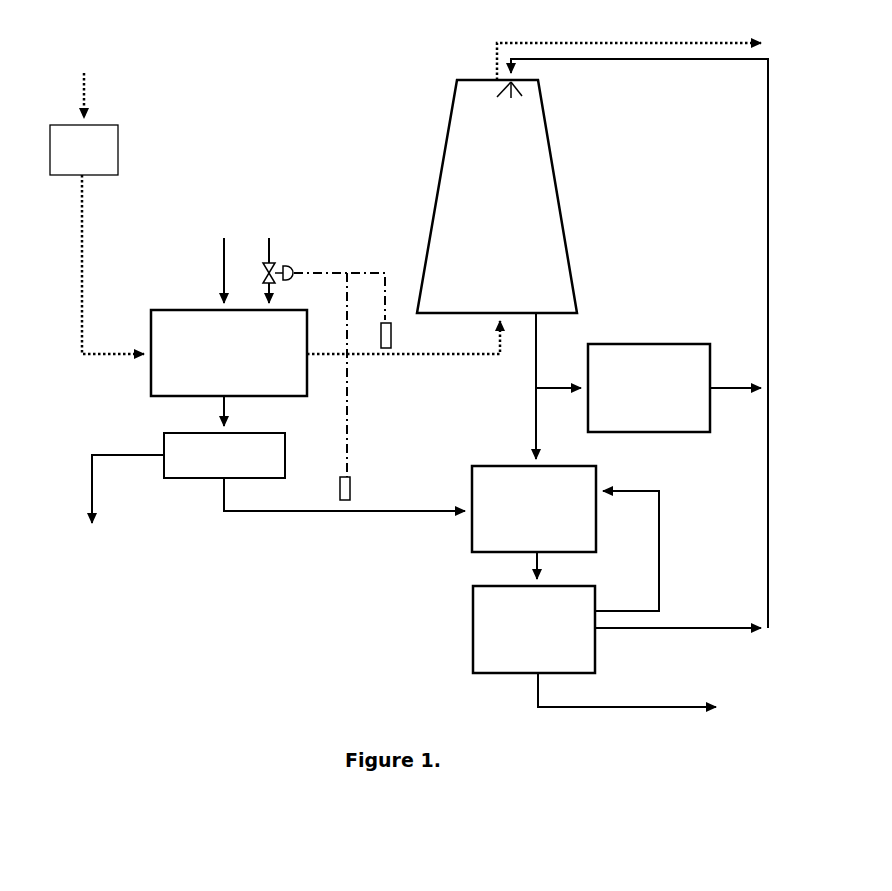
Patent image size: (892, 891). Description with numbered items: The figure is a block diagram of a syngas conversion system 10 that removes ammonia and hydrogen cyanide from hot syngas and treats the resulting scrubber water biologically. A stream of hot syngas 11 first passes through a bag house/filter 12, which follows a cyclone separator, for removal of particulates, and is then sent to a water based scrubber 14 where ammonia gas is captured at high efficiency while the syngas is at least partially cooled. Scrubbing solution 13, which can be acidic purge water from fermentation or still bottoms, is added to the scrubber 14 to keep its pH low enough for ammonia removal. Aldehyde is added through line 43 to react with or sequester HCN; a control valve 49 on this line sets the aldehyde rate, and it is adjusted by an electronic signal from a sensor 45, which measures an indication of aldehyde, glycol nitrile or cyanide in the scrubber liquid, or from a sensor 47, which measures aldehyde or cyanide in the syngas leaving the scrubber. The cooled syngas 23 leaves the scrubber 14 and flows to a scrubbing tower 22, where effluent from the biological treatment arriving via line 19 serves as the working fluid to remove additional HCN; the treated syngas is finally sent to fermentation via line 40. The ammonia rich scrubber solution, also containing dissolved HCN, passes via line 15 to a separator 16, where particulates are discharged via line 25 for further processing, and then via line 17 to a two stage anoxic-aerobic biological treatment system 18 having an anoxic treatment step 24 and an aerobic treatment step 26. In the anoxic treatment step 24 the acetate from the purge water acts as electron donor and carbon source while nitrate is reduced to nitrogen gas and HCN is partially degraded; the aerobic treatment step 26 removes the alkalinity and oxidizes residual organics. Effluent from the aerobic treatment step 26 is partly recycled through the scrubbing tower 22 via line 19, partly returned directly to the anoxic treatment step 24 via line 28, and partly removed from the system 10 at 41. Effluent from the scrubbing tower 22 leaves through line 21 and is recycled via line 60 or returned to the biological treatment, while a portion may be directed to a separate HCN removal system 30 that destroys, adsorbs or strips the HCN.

The syngas conversion system 10 is at (275, 647).
The stream of hot syngas 11 is at (77, 234).
The bag house/filter 12 is at (120, 143).
The scrubbing solution 13 is at (221, 257).
The water based scrubber 14 is at (229, 353).
The line 15 is at (223, 410).
The separator 16 is at (224, 455).
The line 17 is at (373, 515).
The anoxic-aerobic biological treatment system 18 is at (454, 599).
The line 19 is at (771, 282).
The line 21 is at (539, 351).
The scrubbing tower 22 is at (497, 196).
The cooled syngas 23 is at (455, 367).
The anoxic treatment step 24 is at (534, 522).
The line 25 is at (85, 500).
The aerobic treatment step 26 is at (617, 629).
The line 28 is at (669, 550).
The HCN removal system 30 is at (674, 388).
The line 40 is at (644, 59).
The effluent removal point 41 is at (682, 703).
The line 43 is at (268, 257).
The sensor 45 is at (352, 484).
The sensor 47 is at (393, 336).
The control valve 49 is at (295, 267).
The line 60 is at (561, 393).